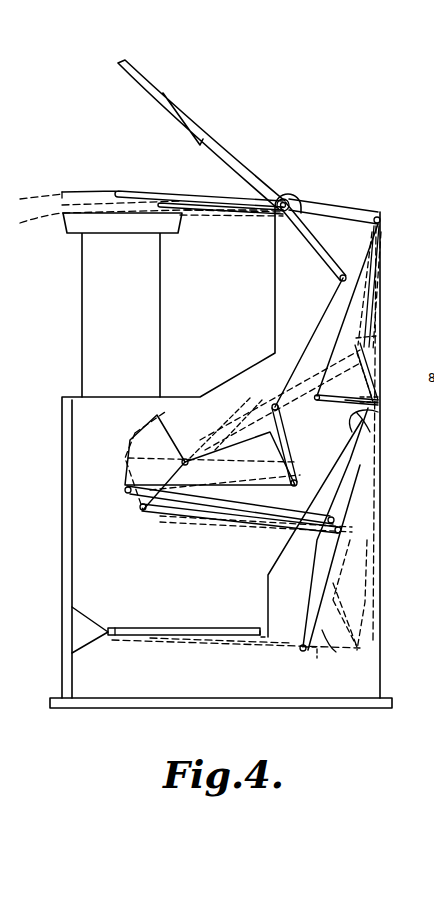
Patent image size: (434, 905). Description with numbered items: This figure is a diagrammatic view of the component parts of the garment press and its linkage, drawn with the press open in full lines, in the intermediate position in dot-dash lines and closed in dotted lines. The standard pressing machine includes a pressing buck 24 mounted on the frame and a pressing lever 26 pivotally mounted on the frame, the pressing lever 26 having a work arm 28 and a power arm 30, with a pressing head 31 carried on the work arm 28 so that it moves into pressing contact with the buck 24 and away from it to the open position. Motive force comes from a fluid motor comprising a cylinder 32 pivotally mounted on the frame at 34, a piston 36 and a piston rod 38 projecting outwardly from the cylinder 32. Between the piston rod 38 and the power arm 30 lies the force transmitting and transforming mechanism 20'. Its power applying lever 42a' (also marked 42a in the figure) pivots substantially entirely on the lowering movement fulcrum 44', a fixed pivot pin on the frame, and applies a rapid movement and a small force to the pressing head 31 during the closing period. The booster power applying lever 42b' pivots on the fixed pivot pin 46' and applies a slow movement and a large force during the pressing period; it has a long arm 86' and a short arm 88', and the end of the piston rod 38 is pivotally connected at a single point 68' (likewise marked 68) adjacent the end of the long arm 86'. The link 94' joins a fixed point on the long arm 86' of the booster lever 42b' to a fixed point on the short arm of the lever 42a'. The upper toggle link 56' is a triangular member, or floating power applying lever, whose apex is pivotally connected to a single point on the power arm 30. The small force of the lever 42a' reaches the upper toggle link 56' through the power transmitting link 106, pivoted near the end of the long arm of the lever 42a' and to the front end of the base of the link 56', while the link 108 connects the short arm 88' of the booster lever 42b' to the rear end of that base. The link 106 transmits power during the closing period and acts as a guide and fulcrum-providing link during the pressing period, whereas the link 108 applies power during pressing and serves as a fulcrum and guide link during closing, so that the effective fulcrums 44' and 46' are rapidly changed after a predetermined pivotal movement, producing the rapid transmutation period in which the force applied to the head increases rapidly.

The force transmitting and transforming mechanism 20' is at (234, 451).
The pressing buck 24 is at (82, 236).
The pressing lever 26 is at (252, 173).
The work arm 28 is at (216, 137).
The power arm 30 is at (352, 200).
The pressing head 31 is at (118, 62).
The cylinder 32 is at (140, 640).
The cylinder pivot mounting 34 is at (104, 640).
The piston 36 is at (114, 630).
The piston rod 38 is at (244, 636).
The plate 42a is at (210, 450).
The power applying lever 42a' is at (217, 461).
The booster power applying lever 42b' is at (363, 529).
The fixed pivot pin 44' is at (202, 454).
The fixed pivot pin 46' is at (380, 431).
The upper toggle link 56' is at (349, 315).
The lower link 68 is at (328, 657).
The piston rod connection point 68' is at (376, 615).
The long arm 86' is at (328, 528).
The short arm 88' is at (385, 414).
The link 94' is at (238, 518).
The power applying link 106 is at (272, 368).
The power transmitting link 108 is at (382, 346).